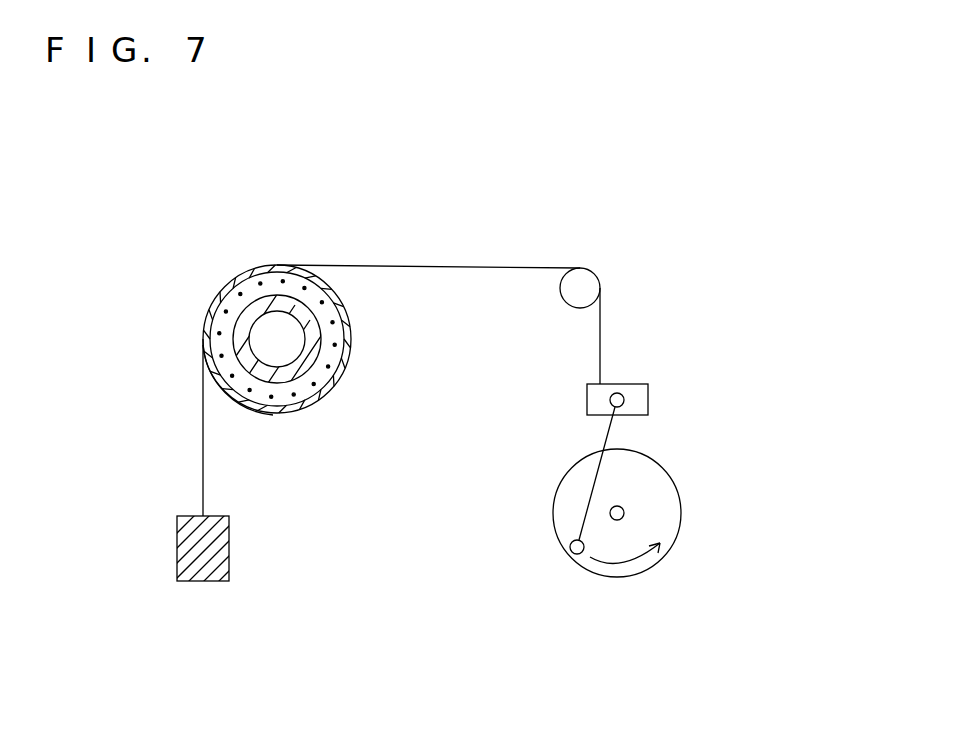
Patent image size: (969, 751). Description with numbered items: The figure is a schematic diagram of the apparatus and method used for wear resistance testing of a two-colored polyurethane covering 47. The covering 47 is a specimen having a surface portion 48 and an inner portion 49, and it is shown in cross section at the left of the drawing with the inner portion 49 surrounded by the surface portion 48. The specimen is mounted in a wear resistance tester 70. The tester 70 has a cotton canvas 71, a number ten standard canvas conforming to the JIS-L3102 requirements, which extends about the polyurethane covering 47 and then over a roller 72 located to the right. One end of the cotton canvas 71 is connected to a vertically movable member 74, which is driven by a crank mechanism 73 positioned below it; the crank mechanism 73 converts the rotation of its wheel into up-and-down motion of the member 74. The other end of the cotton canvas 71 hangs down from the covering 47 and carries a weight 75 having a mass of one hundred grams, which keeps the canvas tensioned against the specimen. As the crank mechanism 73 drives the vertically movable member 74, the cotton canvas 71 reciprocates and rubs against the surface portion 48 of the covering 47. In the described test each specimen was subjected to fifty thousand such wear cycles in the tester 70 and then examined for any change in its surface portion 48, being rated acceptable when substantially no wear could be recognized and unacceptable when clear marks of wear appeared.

The wear resistance tester 70 is at (605, 253).
The cotton canvas 71 is at (482, 267).
The roller 72 is at (573, 297).
The crank mechanism 73 is at (692, 506).
The vertically movable member 74 is at (648, 394).
The weight 75 is at (224, 540).
The two-colored polyurethane covering 47 is at (337, 382).
The surface portion 48 is at (340, 302).
The inner portion 49 is at (335, 340).